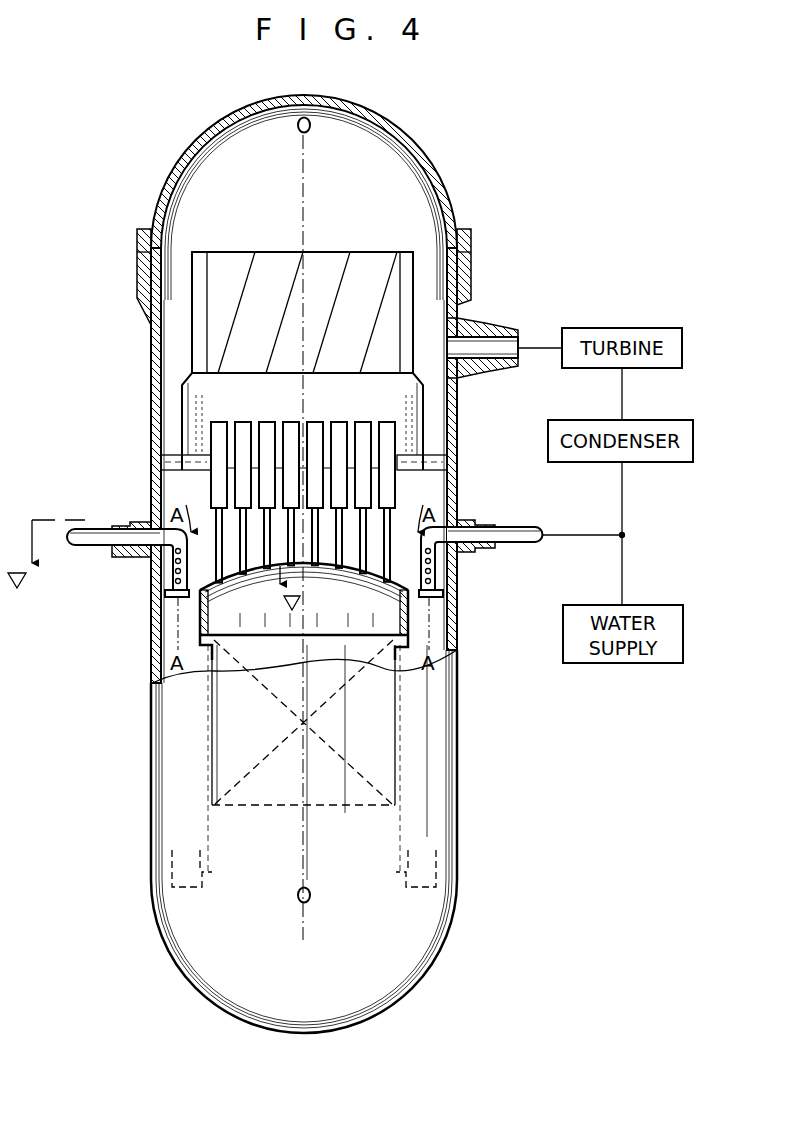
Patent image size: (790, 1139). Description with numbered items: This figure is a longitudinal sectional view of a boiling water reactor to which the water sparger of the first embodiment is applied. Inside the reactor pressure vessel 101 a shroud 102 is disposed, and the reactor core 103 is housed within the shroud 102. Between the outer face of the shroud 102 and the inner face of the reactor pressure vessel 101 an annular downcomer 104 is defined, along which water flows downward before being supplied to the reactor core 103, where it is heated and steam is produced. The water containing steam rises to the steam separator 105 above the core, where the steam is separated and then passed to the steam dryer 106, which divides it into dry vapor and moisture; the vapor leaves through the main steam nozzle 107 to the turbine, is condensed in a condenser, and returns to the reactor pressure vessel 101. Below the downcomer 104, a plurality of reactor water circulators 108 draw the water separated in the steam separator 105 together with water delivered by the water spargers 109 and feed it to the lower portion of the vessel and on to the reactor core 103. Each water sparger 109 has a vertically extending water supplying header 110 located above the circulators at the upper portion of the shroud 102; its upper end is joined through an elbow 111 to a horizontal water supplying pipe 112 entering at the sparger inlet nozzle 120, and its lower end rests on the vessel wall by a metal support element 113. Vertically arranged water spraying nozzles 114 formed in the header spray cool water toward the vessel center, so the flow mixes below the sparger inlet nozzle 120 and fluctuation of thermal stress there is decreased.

The reactor pressure vessel 101 is at (458, 712).
The shroud 102 is at (409, 650).
The reactor core 103 is at (314, 655).
The annular downcomer 104 is at (165, 676).
The steam separator 105 is at (394, 430).
The steam dryer 106 is at (413, 282).
The main steam nozzle 107 is at (503, 325).
The reactor water circulators 108 is at (172, 858).
The water sparger 109 is at (210, 499).
The water supplying header 110 is at (172, 580).
The elbow 111 is at (147, 527).
The water supplying pipe 112 is at (540, 544).
The metal support element 113 is at (175, 598).
The water spraying nozzles 114 is at (445, 598).
The sparger inlet nozzle 120 is at (465, 520).